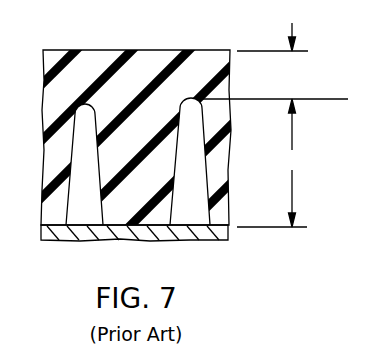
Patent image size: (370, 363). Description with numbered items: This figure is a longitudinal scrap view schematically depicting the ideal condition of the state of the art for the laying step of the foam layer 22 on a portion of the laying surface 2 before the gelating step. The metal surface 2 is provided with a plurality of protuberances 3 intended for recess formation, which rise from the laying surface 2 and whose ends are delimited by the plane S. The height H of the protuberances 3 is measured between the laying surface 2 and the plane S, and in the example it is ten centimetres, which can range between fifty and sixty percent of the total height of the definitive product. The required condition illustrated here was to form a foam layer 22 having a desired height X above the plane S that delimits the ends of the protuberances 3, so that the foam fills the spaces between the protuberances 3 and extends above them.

The foam layer 22 is at (99, 53).
The protuberances 3 is at (71, 222).
The metal surface 2 is at (150, 240).
The plane S is at (323, 99).
The desired height X is at (292, 56).
The height of the protuberances H is at (293, 163).